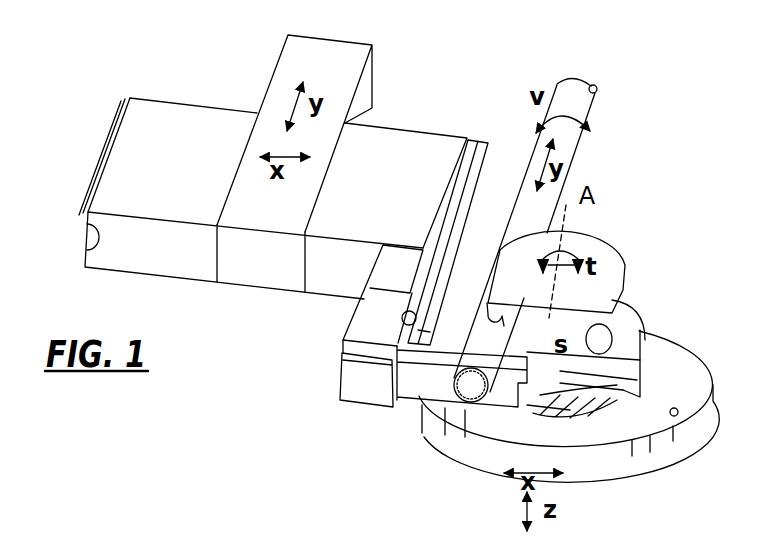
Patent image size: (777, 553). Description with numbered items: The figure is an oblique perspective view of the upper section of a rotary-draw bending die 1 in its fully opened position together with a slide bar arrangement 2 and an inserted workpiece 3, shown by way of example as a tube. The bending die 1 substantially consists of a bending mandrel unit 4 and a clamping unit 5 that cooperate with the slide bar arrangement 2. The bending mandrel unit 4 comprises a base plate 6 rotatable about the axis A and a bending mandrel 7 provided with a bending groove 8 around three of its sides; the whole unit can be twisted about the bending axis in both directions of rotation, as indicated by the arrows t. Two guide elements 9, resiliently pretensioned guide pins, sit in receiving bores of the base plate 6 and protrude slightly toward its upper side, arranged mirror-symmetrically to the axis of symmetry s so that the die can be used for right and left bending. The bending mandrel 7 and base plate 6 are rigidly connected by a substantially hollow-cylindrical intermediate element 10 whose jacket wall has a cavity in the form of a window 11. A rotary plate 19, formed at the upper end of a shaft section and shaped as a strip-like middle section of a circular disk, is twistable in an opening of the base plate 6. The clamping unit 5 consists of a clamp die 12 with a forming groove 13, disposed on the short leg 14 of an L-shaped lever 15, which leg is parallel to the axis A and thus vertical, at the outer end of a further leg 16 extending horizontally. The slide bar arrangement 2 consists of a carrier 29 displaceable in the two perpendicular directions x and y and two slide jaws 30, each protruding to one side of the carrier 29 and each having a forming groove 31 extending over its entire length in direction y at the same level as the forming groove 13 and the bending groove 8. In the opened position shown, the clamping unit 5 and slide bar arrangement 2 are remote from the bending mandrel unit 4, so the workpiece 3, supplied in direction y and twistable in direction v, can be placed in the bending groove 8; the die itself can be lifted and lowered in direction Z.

The rotary-draw bending die 1 is at (240, 413).
The slide bar arrangement 2 is at (410, 84).
The workpiece 3 is at (533, 204).
The bending mandrel unit 4 is at (664, 268).
The clamping unit 5 is at (376, 409).
The base plate 6 is at (698, 382).
The bending mandrel 7 is at (597, 242).
The bending groove 8 is at (496, 324).
The guide elements 9 is at (678, 412).
The intermediate element 10 is at (633, 354).
The window 11 is at (560, 393).
The clamp die 12 is at (381, 296).
The forming groove 13 is at (406, 324).
The short leg 14 is at (347, 372).
The L-shaped lever 15 is at (440, 325).
The further leg 16 is at (430, 387).
The rotary plate 19 is at (587, 391).
The carrier 29 is at (290, 63).
The slide jaws 30 is at (187, 178).
The forming groove 31 is at (78, 240).